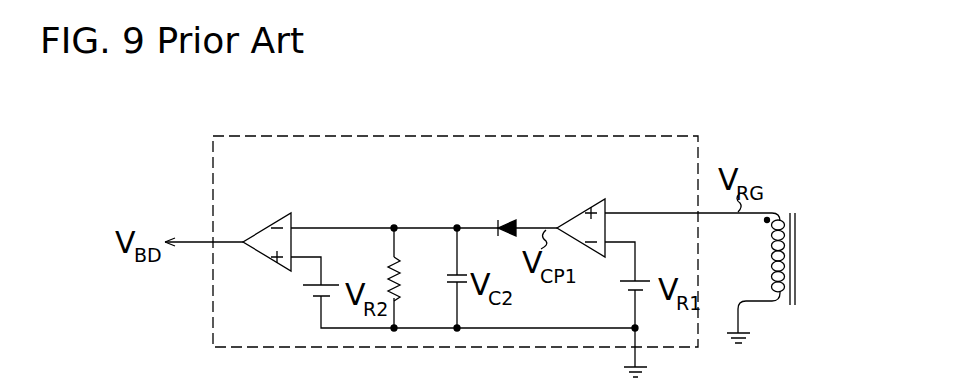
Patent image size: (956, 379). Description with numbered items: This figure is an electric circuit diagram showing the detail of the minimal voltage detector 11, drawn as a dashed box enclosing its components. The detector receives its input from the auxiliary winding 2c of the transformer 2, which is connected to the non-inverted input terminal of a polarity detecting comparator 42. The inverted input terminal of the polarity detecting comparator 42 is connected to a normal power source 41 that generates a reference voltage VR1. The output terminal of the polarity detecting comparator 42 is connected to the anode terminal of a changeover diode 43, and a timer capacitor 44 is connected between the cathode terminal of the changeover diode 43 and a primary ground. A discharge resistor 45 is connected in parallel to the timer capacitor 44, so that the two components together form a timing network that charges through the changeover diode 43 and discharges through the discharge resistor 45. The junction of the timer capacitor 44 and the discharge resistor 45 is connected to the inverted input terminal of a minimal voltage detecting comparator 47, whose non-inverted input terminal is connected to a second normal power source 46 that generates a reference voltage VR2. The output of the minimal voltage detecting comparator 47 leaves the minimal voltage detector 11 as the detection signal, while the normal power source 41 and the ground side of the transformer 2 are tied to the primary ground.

The minimal voltage detector 11 is at (456, 133).
The minimal voltage detecting comparator 47 is at (270, 227).
The normal power source 46 is at (311, 291).
The discharge resistor 45 is at (388, 268).
The timer capacitor 44 is at (452, 274).
The changeover diode 43 is at (502, 221).
The polarity detecting comparator 42 is at (576, 214).
The normal power source 41 is at (626, 282).
The auxiliary winding 2c is at (771, 257).
The transformer 2 is at (760, 294).